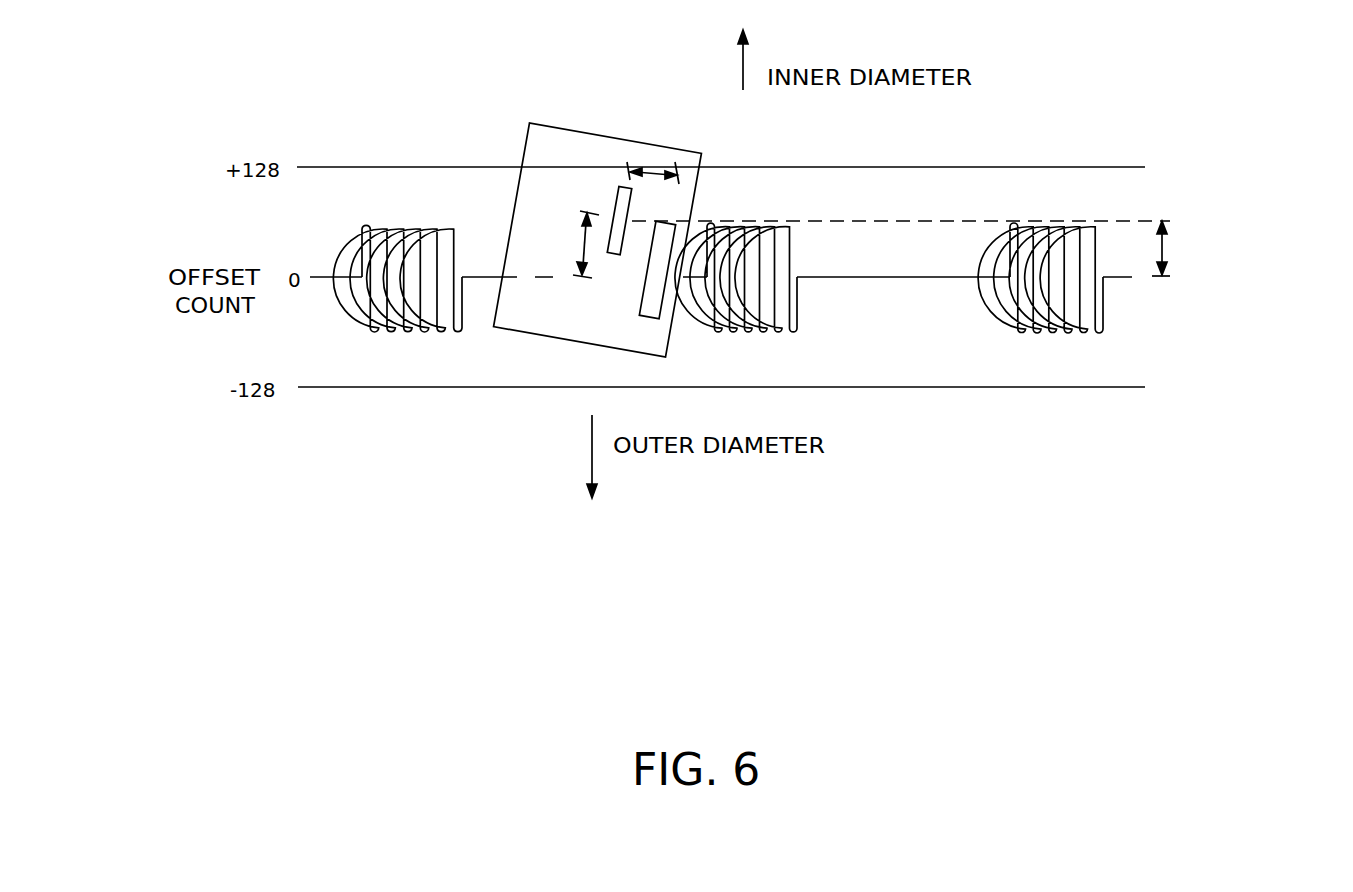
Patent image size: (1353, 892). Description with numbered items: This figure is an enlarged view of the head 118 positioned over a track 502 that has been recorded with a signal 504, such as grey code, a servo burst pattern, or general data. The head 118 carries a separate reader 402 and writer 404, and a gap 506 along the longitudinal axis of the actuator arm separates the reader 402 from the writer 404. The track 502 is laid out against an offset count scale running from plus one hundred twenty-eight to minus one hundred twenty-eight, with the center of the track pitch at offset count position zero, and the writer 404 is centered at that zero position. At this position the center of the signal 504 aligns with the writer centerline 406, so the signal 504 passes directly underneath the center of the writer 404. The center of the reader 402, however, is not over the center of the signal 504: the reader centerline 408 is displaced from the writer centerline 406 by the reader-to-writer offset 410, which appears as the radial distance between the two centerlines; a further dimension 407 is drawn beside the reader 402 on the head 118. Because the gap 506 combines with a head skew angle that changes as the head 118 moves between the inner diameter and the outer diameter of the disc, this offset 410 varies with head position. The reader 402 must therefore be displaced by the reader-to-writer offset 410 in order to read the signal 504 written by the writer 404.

The track 502 is at (214, 225).
The signal 504 is at (412, 323).
The head 118 is at (523, 147).
The reader 402 is at (619, 188).
The writer 404 is at (660, 315).
The gap 506 is at (656, 172).
The offset dimension 407 is at (585, 250).
The reader centerline 408 is at (1152, 218).
The reader-to-writer offset 410 is at (1170, 248).
The writer centerline 406 is at (1152, 278).